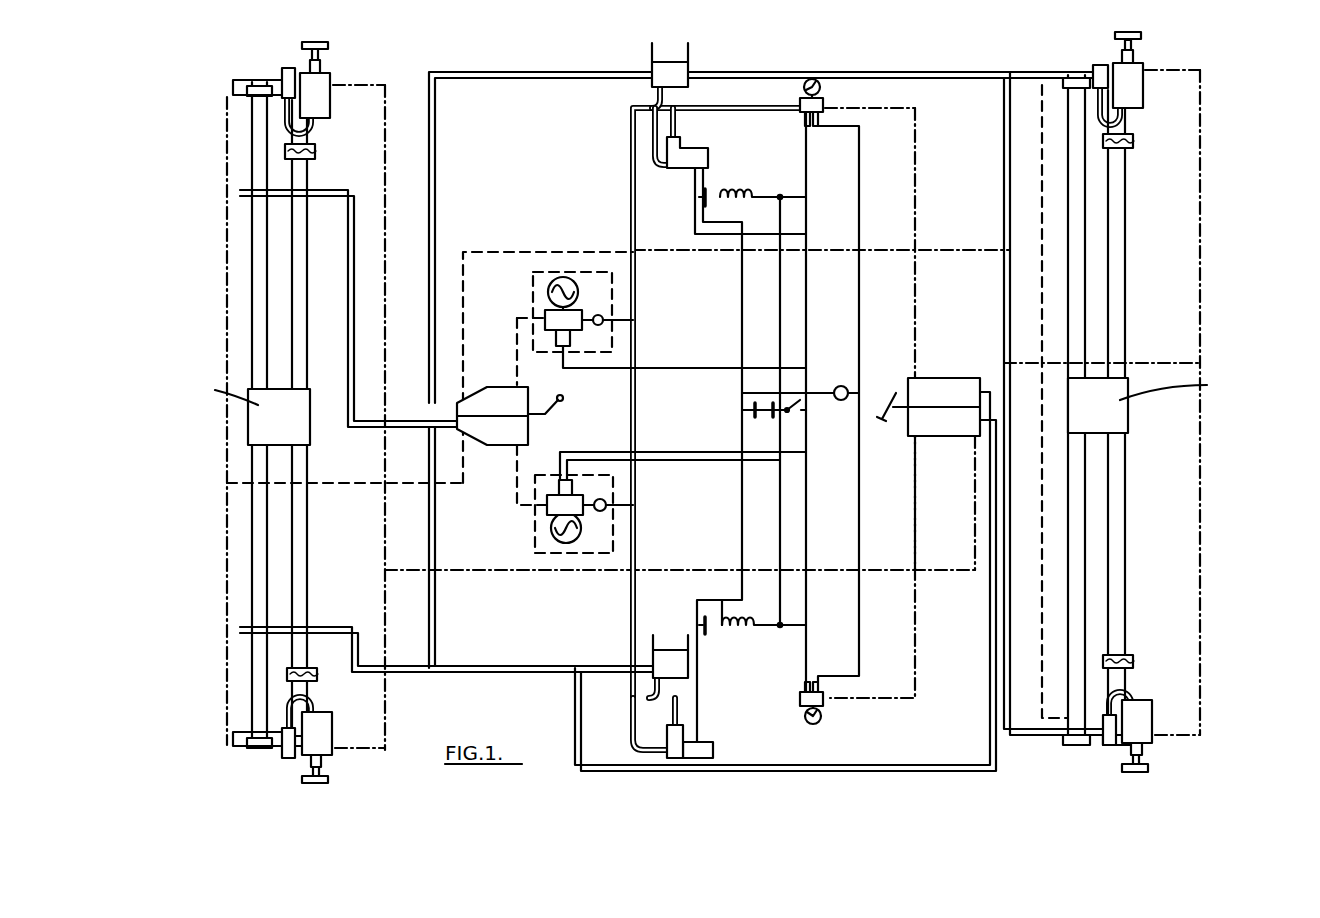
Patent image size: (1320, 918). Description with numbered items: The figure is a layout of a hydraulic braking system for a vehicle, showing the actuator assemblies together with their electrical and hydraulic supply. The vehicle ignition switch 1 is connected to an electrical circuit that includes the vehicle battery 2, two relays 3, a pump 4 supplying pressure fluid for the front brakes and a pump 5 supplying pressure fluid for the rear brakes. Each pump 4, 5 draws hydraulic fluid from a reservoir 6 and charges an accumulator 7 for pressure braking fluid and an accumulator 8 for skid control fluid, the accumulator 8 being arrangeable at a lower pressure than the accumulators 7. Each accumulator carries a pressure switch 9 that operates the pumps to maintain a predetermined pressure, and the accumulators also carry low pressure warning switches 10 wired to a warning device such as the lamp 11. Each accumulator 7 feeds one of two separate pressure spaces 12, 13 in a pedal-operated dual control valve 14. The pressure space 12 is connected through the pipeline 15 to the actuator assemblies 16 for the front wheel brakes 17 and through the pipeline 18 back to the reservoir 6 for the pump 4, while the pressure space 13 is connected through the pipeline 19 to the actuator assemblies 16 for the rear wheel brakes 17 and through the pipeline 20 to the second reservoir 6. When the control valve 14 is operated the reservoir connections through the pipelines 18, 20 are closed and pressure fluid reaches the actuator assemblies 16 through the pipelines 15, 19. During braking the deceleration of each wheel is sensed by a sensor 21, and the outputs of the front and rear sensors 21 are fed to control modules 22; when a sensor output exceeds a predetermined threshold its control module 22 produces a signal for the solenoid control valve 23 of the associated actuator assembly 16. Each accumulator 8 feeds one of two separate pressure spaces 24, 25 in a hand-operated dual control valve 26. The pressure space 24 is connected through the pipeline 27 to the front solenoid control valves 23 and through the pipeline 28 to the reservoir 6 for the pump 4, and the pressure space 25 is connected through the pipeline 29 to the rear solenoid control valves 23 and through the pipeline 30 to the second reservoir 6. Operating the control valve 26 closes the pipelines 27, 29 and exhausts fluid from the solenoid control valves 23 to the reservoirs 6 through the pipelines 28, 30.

The vehicle ignition switch 1 is at (798, 413).
The vehicle battery 2 is at (765, 418).
The relays 3 is at (735, 196).
The pump 4 is at (713, 750).
The pump 5 is at (710, 156).
The reservoir 6 is at (690, 62).
The accumulator 7 is at (811, 78).
The accumulator 8 is at (565, 277).
The pressure switch 9 is at (557, 348).
The low pressure warning switch 10 is at (823, 122).
The lamp 11 is at (841, 386).
The pressure space 12 is at (958, 431).
The pressure space 13 is at (958, 401).
The pedal-operated dual control valve 14 is at (928, 384).
The pipeline 15 is at (945, 566).
The actuator assembly 16 is at (330, 105).
The wheel brake 17 is at (328, 46).
The pipeline 18 is at (945, 765).
The pipeline 19 is at (1160, 363).
The pipeline 20 is at (985, 78).
The sensor 21 is at (315, 150).
The control module 22 is at (302, 398).
The solenoid control valve 23 is at (288, 72).
The pressure space 24 is at (517, 439).
The pressure space 25 is at (517, 407).
The hand-operated dual control valve 26 is at (510, 382).
The pipeline 27 is at (357, 490).
The pipeline 28 is at (437, 526).
The pipeline 29 is at (492, 252).
The pipeline 30 is at (435, 180).